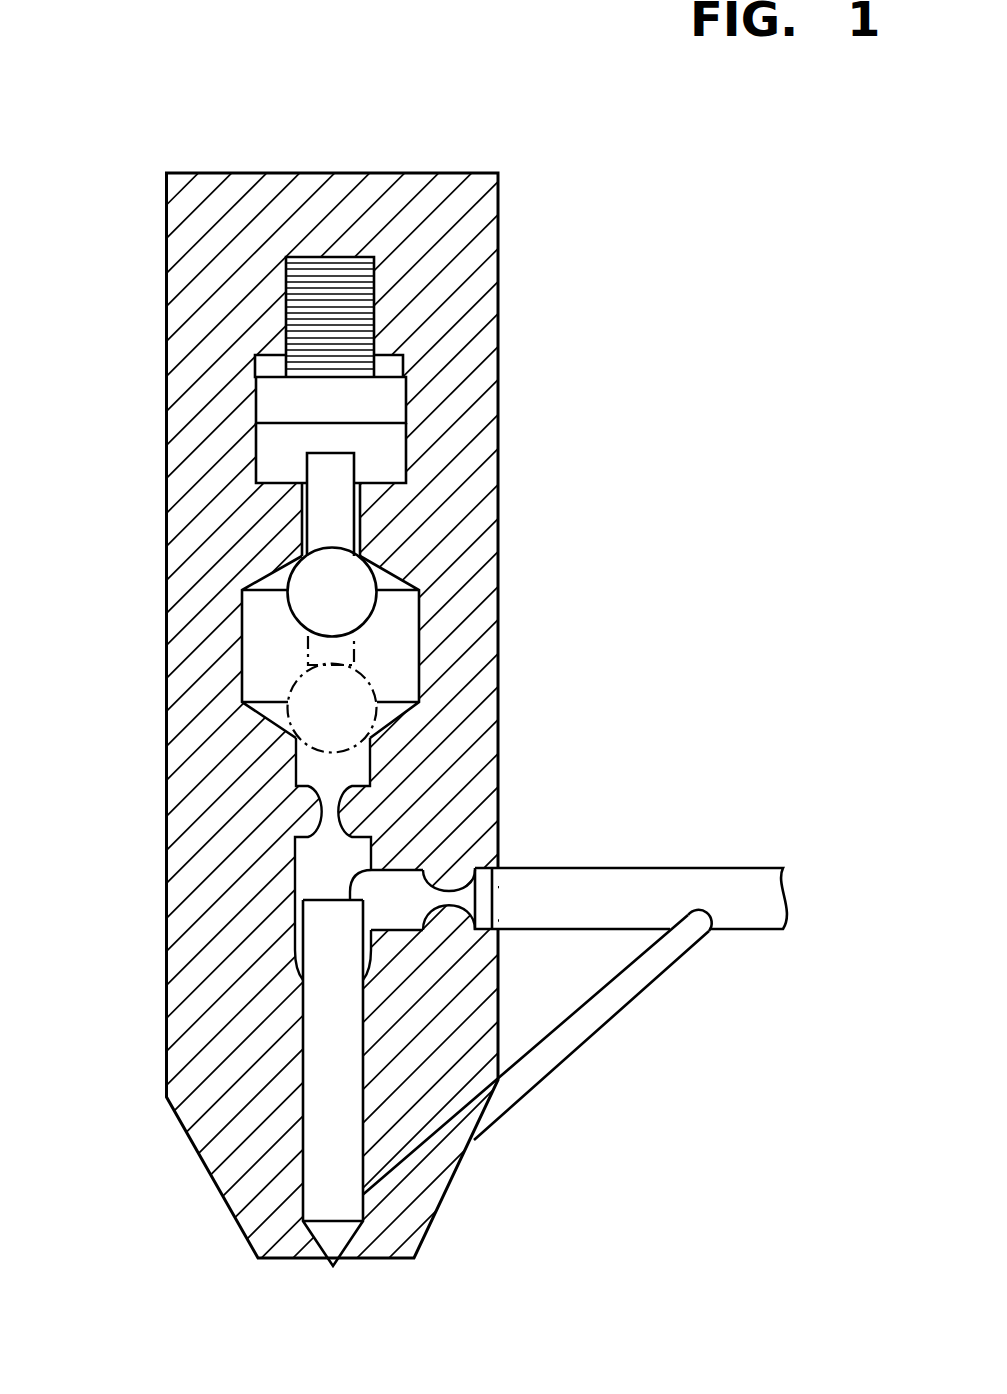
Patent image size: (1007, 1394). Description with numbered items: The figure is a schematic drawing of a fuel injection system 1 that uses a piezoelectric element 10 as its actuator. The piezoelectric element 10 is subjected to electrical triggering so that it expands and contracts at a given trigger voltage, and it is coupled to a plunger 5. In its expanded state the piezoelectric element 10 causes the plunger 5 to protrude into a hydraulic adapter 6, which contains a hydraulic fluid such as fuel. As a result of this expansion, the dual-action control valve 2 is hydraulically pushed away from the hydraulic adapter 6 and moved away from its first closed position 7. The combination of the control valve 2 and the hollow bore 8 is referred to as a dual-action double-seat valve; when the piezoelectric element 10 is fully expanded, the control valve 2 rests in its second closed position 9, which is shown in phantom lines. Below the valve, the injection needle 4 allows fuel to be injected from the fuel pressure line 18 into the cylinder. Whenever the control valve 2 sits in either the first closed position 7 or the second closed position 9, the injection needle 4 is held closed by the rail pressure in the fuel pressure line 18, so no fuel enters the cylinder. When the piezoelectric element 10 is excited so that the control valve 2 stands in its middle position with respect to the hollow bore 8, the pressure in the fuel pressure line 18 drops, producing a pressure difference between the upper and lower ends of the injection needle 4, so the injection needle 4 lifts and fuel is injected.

The fuel injector 1 is at (378, 152).
The control valve 2 is at (332, 508).
The injection needle 4 is at (325, 1055).
The plunger 5 is at (383, 400).
The hydraulic adapter 6 is at (387, 458).
The first closed position 7 is at (372, 556).
The hollow bore 8 is at (410, 634).
The second closed position 9 is at (378, 737).
The piezoelectric element 10 is at (318, 313).
The fuel pressure line 18 is at (697, 895).